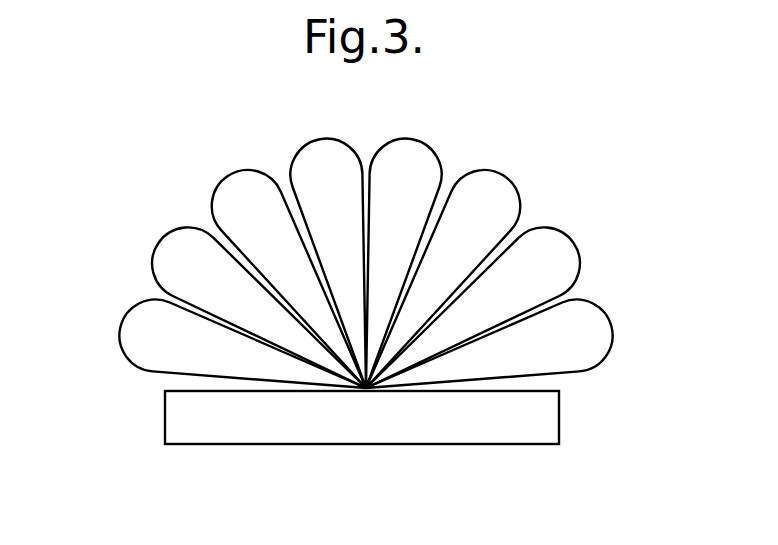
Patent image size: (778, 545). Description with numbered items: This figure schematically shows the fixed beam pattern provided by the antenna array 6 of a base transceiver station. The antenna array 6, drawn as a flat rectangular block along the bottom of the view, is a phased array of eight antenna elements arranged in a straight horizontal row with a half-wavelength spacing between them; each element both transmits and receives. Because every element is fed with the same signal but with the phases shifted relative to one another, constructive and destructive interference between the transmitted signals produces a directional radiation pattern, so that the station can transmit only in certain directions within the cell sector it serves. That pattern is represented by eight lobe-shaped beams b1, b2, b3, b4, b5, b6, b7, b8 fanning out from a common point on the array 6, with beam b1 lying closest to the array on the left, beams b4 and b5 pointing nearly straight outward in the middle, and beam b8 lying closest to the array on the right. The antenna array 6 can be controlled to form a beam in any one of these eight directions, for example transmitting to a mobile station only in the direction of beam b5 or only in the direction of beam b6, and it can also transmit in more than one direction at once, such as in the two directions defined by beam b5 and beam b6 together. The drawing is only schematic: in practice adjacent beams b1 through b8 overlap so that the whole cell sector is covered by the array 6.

The antenna array 6 is at (374, 425).
The beam b1 is at (140, 326).
The beam b2 is at (170, 252).
The beam b3 is at (232, 192).
The beam b4 is at (320, 150).
The beam b5 is at (417, 150).
The beam b6 is at (502, 193).
The beam b7 is at (560, 252).
The beam b8 is at (590, 328).